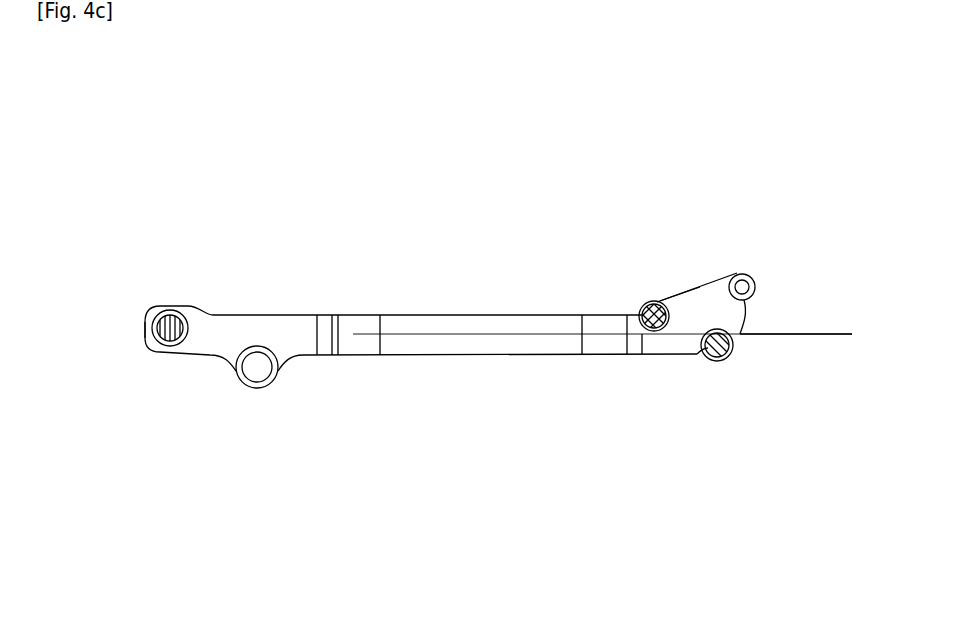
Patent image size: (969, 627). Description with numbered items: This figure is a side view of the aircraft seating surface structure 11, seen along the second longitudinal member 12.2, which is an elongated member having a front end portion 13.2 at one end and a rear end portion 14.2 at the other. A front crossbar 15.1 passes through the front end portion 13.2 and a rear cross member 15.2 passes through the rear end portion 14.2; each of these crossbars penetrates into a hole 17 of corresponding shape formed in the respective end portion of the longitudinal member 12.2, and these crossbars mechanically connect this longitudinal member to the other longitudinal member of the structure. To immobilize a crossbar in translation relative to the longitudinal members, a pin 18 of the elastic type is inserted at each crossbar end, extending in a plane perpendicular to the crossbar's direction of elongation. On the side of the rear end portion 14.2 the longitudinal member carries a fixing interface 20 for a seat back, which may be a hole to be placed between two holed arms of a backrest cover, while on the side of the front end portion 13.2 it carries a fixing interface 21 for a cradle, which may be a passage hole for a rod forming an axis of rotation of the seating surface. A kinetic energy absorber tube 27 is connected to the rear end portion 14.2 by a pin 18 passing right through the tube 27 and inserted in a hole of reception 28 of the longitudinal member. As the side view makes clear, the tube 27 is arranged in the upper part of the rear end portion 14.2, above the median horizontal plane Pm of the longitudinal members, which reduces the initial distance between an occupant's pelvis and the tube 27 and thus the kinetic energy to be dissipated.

The seating surface structure 11 is at (158, 158).
The second longitudinal member 12.2 is at (353, 336).
The front end portion 13.2 is at (205, 306).
The rear end portion 14.2 is at (687, 293).
The front crossbar 15.1 is at (153, 306).
The rear cross member 15.2 is at (742, 360).
The hole 17 is at (142, 353).
The pin 18 is at (666, 300).
The fixing interface 20 is at (748, 275).
The fixing interface 21 is at (240, 381).
The kinetic energy absorber tube 27 is at (647, 304).
The hole of reception 28 is at (653, 301).
The median horizontal plane Pm is at (795, 333).